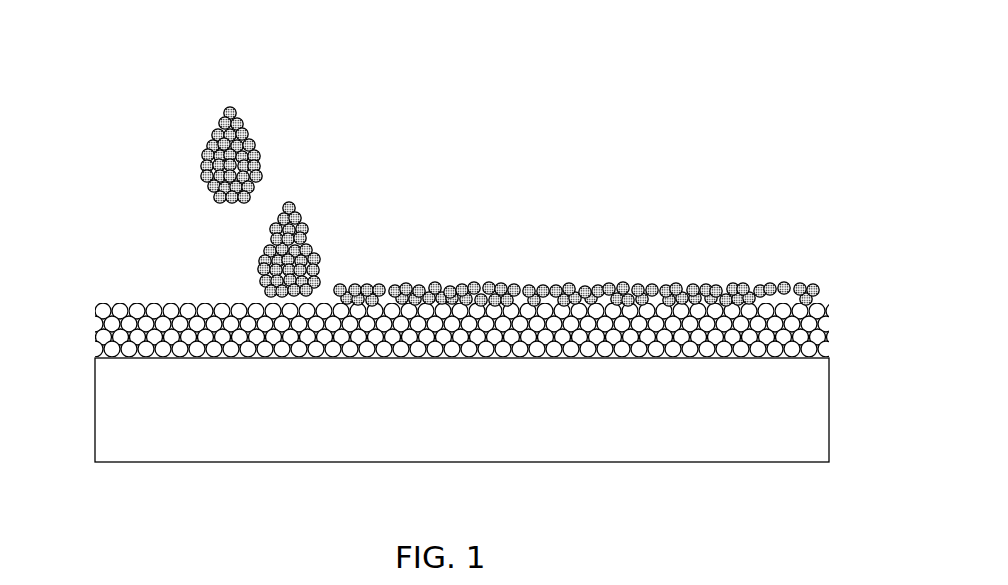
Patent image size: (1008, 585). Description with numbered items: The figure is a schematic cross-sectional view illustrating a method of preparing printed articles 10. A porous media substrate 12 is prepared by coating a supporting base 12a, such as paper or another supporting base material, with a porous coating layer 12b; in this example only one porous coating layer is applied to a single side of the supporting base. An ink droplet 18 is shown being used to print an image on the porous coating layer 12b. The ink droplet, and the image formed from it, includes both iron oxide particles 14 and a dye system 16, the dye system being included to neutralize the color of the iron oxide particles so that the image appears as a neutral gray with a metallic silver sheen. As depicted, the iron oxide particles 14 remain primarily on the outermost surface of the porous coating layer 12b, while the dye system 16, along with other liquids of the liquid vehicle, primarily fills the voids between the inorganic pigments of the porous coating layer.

The method of preparing printed articles 10 is at (127, 224).
The porous media substrate 12 is at (87, 305).
The supporting base 12a is at (793, 419).
The porous coating layer 12b is at (798, 328).
The iron oxide particles 14 is at (300, 226).
The dye system 16 is at (318, 263).
The ink droplet 18 is at (276, 117).